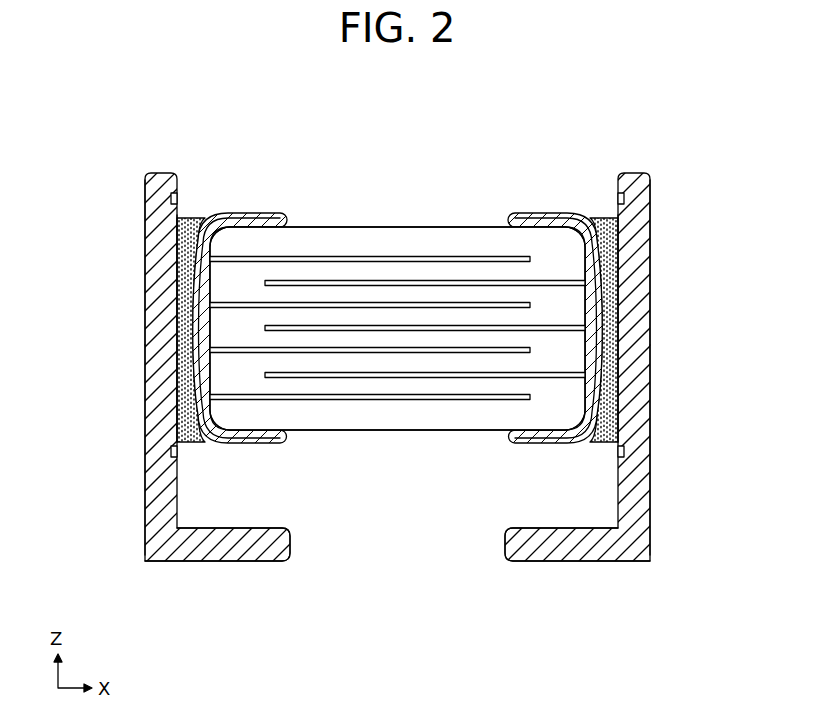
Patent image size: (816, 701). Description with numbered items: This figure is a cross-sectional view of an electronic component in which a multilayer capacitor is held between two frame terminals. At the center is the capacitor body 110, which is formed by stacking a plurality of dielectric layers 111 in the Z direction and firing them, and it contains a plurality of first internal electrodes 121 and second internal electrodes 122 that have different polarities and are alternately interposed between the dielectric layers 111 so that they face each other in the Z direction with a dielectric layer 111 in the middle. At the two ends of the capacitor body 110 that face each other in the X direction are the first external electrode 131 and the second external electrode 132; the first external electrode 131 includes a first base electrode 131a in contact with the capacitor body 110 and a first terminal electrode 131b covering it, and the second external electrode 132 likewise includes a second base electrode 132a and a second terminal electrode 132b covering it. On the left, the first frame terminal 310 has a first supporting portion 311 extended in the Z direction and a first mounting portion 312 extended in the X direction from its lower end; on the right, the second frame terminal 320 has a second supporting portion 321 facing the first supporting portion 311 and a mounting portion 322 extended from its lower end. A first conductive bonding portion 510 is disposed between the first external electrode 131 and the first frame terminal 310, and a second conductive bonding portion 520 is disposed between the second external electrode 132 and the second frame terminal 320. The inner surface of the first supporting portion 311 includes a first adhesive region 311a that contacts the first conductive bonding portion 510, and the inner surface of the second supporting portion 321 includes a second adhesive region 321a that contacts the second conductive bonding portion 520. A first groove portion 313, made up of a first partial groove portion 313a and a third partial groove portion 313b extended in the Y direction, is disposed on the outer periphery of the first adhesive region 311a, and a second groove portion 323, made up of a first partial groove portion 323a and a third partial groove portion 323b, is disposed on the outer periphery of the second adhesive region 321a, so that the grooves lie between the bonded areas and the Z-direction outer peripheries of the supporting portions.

The capacitor body 110 is at (358, 227).
The dielectric layer 111 is at (456, 295).
The first internal electrode 121 is at (487, 310).
The second internal electrode 122 is at (403, 283).
The first external electrode 131 is at (256, 276).
The first base electrode 131a is at (262, 216).
The first terminal electrode 131b is at (233, 216).
The second external electrode 132 is at (545, 273).
The second base electrode 132a is at (600, 142).
The second terminal electrode 132b is at (562, 215).
The first frame terminal 310 is at (330, 376).
The first supporting portion 311 is at (160, 513).
The first adhesive region 311a is at (228, 437).
The first mounting portion 312 is at (222, 545).
The first groove portion 313 is at (78, 367).
The first partial groove portion 313a is at (145, 440).
The third partial groove portion 313b is at (145, 232).
The second frame terminal 320 is at (472, 376).
The second supporting portion 321 is at (637, 512).
The second adhesive region 321a is at (565, 437).
The mounting portion 322 is at (575, 545).
The second groove portion 323 is at (717, 367).
The first partial groove portion 323a is at (652, 430).
The third partial groove portion 323b is at (652, 232).
The first conductive bonding portion 510 is at (191, 233).
The second conductive bonding portion 520 is at (605, 235).